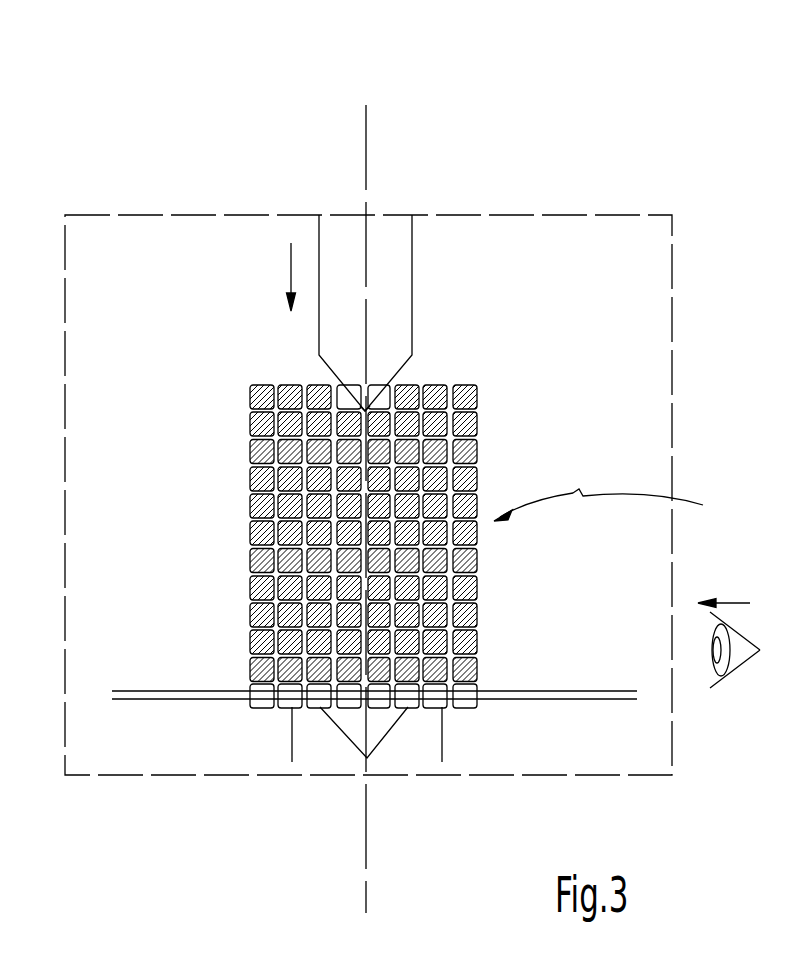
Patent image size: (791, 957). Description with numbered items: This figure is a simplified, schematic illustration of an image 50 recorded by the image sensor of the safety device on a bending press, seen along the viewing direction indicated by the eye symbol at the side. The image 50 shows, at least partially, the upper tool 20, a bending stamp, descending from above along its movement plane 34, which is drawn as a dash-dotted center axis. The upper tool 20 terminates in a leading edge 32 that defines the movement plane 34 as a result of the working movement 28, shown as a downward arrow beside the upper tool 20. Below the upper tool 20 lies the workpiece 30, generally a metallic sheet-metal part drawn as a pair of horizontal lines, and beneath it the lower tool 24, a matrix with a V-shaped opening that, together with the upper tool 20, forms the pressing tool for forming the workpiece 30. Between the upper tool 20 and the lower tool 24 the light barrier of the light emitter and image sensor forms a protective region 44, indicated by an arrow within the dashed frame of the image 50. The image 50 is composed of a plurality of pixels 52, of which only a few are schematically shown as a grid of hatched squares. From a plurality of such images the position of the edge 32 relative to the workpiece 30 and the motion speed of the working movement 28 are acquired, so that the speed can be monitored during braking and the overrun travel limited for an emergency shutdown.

The upper tool 20 is at (412, 300).
The lower tool 24 is at (445, 737).
The working movement 28 is at (289, 282).
The workpiece 30 is at (207, 690).
The leading edge 32 is at (362, 408).
The movement plane 34 is at (365, 145).
The protective region 44 is at (611, 505).
The image 50 is at (592, 215).
The pixels 52 is at (250, 472).